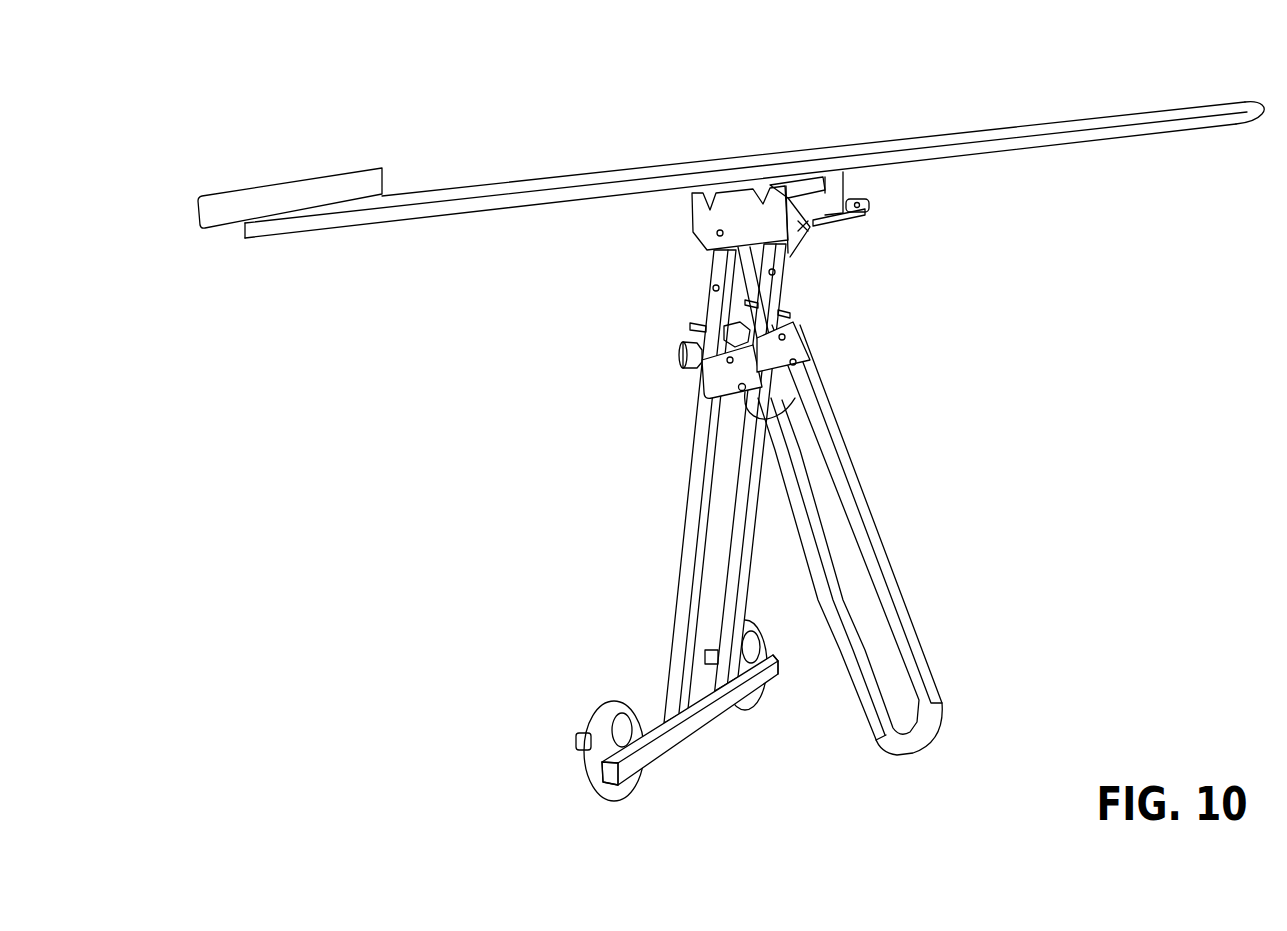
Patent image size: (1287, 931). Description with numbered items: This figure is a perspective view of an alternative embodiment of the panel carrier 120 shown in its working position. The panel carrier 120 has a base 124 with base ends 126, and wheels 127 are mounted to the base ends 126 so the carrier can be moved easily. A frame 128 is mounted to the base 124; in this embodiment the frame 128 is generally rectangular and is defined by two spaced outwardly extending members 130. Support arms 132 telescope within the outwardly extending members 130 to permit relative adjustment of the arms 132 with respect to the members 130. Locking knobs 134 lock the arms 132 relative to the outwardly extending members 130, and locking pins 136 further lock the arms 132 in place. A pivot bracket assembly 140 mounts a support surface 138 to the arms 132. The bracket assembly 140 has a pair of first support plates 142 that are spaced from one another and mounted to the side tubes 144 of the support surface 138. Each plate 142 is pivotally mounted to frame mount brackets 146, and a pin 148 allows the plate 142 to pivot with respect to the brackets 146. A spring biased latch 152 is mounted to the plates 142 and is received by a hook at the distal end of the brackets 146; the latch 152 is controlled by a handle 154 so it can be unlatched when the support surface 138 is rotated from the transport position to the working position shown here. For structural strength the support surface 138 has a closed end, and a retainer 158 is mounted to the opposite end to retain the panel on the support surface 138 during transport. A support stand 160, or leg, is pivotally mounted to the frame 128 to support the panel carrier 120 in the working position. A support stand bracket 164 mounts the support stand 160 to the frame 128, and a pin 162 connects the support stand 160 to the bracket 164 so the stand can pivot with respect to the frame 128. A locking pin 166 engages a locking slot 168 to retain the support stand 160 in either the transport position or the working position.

The panel carrier 120 is at (287, 128).
The base 124 is at (708, 715).
The base ends 126 is at (770, 675).
The wheels 127 is at (603, 720).
The frame 128 is at (668, 634).
The outwardly extending members 130 is at (690, 494).
The support arms 132 is at (712, 296).
The locking knobs 134 is at (679, 356).
The locking pins 136 is at (688, 328).
The support surface 138 is at (507, 178).
The pivot bracket assembly 140 is at (816, 245).
The first support plates 142 is at (848, 195).
The side tubes 144 is at (1068, 146).
The frame mount brackets 146 is at (790, 305).
The pin 148 is at (721, 229).
The spring biased latch 152 is at (808, 227).
The handle 154 is at (870, 206).
The retainer 158 is at (218, 203).
The support stand 160 is at (878, 535).
The pin 162 is at (800, 344).
The support stand bracket 164 is at (695, 382).
The locking pin 166 is at (735, 393).
The locking slot 168 is at (792, 398).